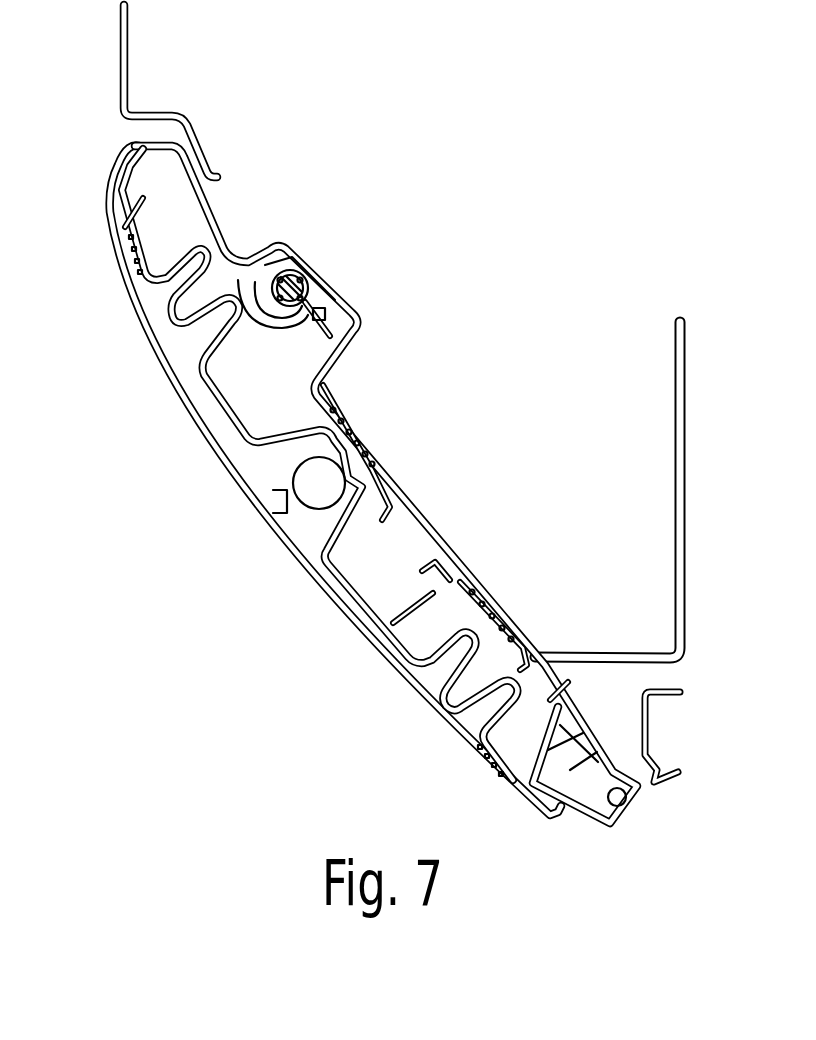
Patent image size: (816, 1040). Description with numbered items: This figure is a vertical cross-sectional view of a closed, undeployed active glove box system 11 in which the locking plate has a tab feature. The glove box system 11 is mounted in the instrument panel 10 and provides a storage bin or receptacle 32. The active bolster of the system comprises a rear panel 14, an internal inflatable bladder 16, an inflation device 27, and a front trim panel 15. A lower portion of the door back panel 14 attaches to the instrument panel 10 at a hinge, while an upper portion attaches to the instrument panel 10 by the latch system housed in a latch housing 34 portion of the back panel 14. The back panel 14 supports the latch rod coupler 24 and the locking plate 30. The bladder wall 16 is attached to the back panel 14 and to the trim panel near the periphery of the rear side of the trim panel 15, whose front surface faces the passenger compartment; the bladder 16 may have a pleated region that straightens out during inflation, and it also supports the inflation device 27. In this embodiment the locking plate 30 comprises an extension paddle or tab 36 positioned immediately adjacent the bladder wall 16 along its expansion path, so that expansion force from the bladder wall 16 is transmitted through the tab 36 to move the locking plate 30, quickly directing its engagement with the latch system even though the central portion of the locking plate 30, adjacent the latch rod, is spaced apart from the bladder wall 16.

The instrument panel 10 is at (120, 60).
The glove box system 11 is at (150, 558).
The rear panel 14 is at (217, 220).
The front trim panel 15 is at (307, 553).
The internal inflatable bladder 16 is at (182, 317).
The latch rod coupler 24 is at (320, 297).
The inflation device 27 is at (312, 482).
The locking plate 30 is at (255, 283).
The storage bin or receptacle 32 is at (598, 603).
The latch housing 34 is at (297, 253).
The extension paddle or tab 36 is at (250, 323).